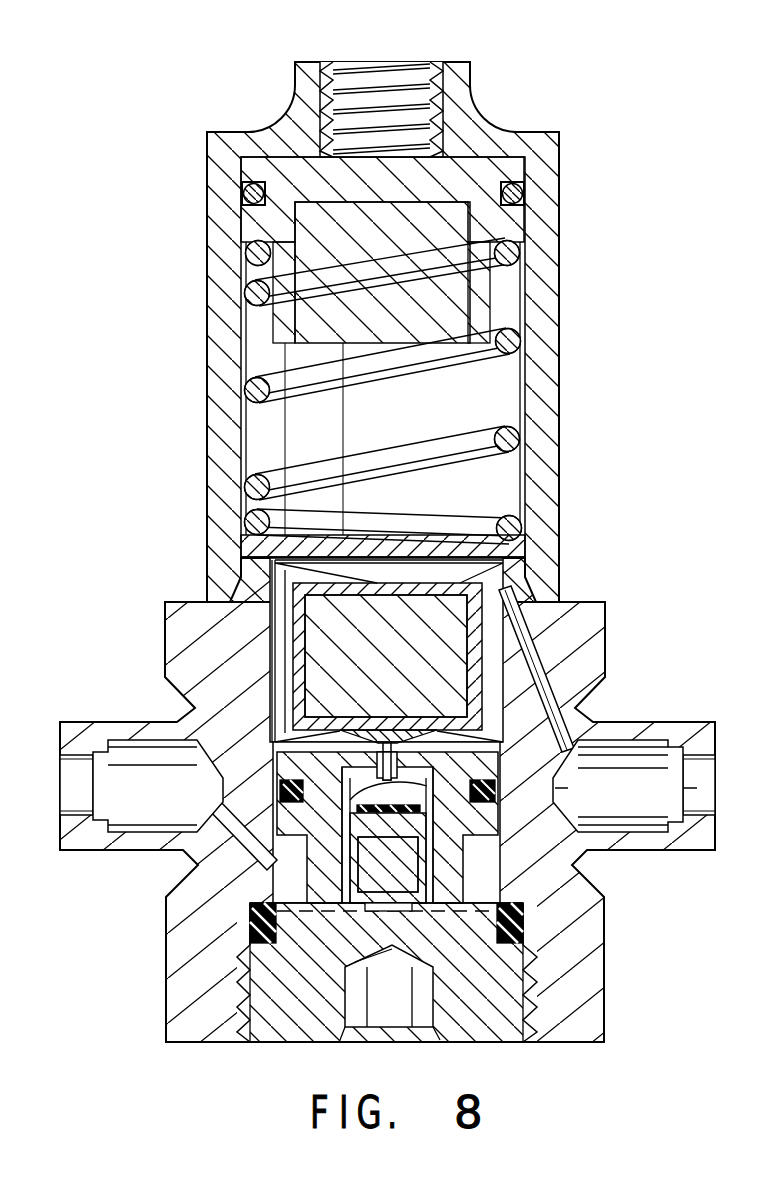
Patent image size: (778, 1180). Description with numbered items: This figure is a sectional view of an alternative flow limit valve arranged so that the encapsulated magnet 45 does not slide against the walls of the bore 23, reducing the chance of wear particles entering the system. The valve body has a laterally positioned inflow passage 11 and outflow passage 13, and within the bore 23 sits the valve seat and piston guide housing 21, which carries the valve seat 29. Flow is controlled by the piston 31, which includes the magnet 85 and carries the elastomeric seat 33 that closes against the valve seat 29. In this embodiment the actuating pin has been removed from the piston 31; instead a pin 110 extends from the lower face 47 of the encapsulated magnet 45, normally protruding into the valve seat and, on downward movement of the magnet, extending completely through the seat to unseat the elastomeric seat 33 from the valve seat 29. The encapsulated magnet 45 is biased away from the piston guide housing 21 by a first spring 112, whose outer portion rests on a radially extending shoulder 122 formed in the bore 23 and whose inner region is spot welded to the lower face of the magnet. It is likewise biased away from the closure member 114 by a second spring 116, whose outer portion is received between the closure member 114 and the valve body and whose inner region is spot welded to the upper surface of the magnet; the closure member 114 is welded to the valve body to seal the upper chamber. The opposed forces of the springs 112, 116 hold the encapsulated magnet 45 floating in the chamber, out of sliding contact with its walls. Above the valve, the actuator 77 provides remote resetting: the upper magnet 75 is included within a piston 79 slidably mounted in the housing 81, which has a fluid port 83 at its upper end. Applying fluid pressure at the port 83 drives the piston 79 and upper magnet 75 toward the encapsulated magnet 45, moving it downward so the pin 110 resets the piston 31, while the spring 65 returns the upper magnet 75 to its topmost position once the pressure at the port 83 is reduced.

The inflow passage 11 is at (158, 786).
The outflow passage 13 is at (625, 786).
The valve seat and piston guide housing 21 is at (478, 822).
The internal bore 23 is at (500, 668).
The valve seat 29 is at (470, 812).
The piston 31 is at (422, 865).
The elastomeric seat 33 is at (344, 795).
The encapsulated magnet 45 is at (322, 637).
The lower face 47 is at (293, 733).
The spring 65 is at (518, 437).
The upper magnet 75 is at (450, 302).
The actuator 77 is at (383, 391).
The piston 79 is at (522, 165).
The housing 81 is at (550, 363).
The fluid port 83 is at (382, 87).
The magnet 85 is at (350, 872).
The pin 110 is at (388, 755).
The first spring 112 is at (478, 735).
The closure member 114 is at (512, 550).
The second spring 116 is at (478, 580).
The shoulder 122 is at (297, 733).